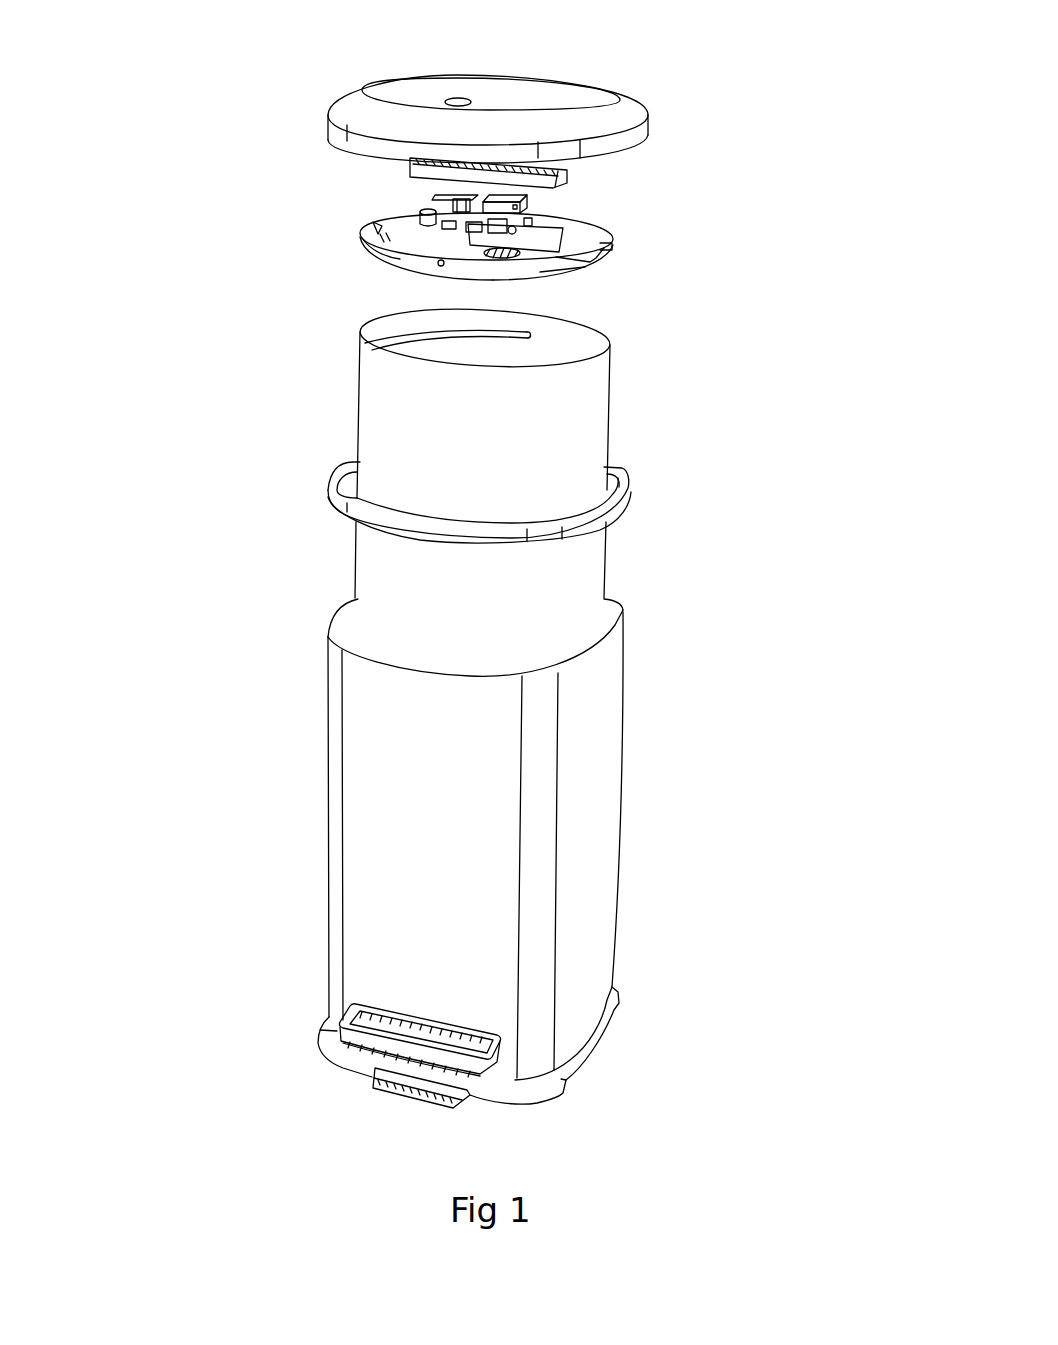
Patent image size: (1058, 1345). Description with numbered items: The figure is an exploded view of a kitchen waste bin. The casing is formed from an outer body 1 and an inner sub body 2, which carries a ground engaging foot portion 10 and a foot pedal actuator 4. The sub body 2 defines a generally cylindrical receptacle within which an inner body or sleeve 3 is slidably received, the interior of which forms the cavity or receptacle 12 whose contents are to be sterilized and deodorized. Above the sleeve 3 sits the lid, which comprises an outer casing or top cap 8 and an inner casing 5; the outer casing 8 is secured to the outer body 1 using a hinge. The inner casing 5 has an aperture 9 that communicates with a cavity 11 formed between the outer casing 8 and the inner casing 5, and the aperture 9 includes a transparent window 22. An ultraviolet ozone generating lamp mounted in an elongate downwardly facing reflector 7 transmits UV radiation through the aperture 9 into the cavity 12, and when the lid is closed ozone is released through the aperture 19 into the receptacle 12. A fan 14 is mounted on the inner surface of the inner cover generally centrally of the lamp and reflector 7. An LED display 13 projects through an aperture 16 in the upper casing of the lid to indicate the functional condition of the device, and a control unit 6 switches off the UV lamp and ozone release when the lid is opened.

The outer body 1 is at (622, 703).
The inner sub body 2 is at (630, 482).
The inner body or sleeve 3 is at (608, 397).
The foot pedal actuator 4 is at (502, 1053).
The inner casing 5 is at (613, 242).
The control unit 6 is at (430, 219).
The reflector 7 is at (397, 168).
The outer casing or top cap 8 is at (650, 128).
The aperture 9 is at (422, 257).
The ground engaging foot portion 10 is at (617, 1017).
The cavity 11 is at (385, 247).
The cavity within the receptacle 12 is at (410, 347).
The LED display 13 is at (440, 194).
The fan 14 is at (527, 205).
The aperture 16 is at (452, 99).
The aperture 19 is at (565, 258).
The transparent window 22 is at (560, 277).